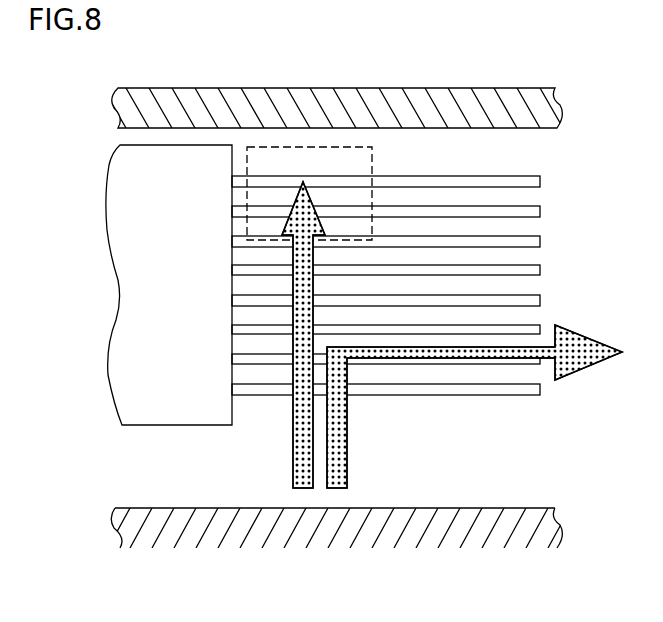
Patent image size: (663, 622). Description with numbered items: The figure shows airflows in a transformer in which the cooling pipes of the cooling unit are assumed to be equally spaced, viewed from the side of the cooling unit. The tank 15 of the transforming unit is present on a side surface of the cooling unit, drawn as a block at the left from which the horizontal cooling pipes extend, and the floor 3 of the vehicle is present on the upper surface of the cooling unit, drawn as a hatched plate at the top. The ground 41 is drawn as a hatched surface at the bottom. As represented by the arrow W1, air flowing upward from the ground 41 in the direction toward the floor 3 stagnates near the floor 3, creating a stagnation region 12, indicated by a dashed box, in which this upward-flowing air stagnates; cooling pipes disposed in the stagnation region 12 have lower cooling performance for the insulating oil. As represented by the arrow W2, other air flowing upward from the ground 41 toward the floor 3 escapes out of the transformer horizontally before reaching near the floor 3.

The floor 3 is at (498, 108).
The stagnation region 12 is at (313, 147).
The tank 15 is at (143, 290).
The ground 41 is at (511, 530).
The arrow W1 is at (290, 463).
The arrow W2 is at (350, 462).